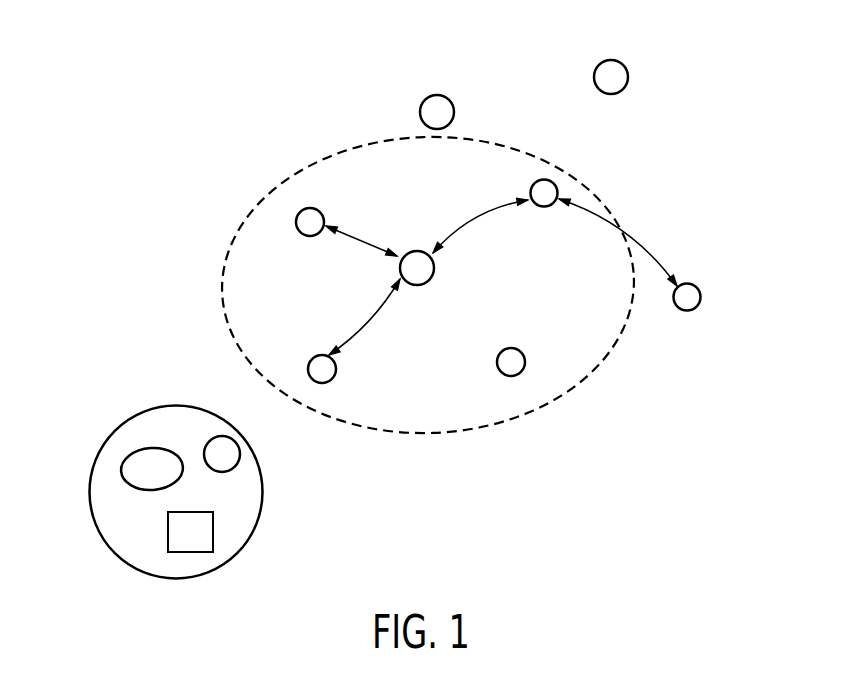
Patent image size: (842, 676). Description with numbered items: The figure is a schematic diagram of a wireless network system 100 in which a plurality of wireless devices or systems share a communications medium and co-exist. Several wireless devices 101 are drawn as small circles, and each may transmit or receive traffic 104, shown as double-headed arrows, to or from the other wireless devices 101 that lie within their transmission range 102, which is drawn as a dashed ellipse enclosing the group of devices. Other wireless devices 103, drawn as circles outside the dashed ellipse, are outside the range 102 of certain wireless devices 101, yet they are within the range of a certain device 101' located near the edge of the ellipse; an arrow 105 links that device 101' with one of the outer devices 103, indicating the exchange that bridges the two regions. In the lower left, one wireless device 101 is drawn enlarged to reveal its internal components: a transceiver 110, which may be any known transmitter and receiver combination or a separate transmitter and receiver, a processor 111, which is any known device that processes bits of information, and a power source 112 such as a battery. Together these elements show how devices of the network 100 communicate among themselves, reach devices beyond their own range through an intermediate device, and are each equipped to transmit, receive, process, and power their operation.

The wireless network system 100 is at (715, 36).
The wireless device 101 is at (281, 403).
The wireless device 101' is at (503, 182).
The transmission range 102 is at (611, 357).
The wireless device 103 is at (424, 98).
The traffic 104 is at (366, 240).
The external communication link 105 is at (645, 246).
The transceiver 110 is at (138, 462).
The processor 111 is at (205, 530).
The power source 112 is at (222, 446).